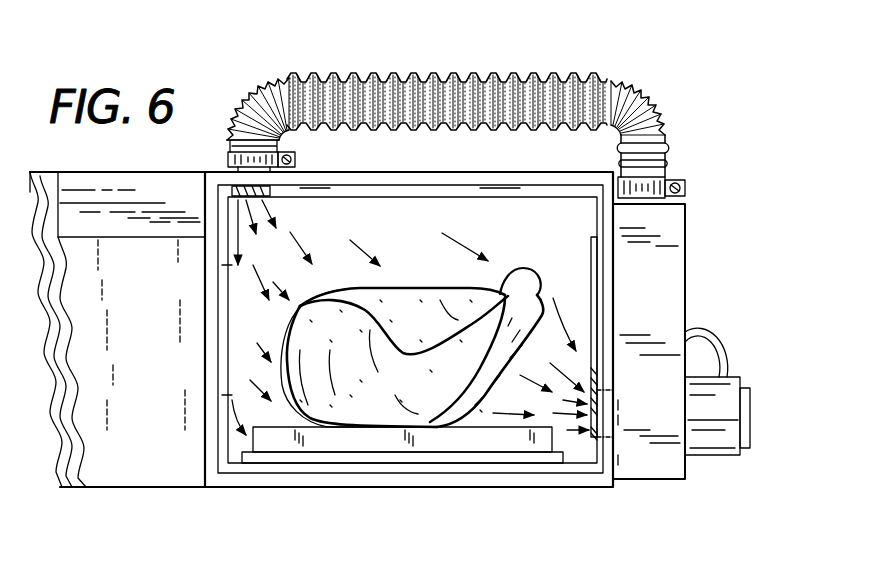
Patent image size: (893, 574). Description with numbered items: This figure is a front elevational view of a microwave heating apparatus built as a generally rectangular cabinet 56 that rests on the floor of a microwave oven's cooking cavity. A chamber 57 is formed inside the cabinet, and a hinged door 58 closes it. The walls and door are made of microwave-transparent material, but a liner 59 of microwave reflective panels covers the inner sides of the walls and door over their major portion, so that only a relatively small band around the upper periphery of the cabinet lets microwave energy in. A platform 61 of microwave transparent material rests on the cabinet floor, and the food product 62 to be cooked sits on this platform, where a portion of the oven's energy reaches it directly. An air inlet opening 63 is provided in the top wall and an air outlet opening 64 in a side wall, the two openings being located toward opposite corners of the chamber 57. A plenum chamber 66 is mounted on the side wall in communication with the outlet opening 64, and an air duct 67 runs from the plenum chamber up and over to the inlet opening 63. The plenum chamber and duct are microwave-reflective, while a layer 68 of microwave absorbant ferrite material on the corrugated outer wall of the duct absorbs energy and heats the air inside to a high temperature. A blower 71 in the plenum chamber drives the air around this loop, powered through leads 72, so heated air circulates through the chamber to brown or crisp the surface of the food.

The cabinet 56 is at (460, 151).
The chamber 57 is at (418, 227).
The hinged door 58 is at (150, 192).
The liner 59 is at (152, 450).
The platform 61 is at (375, 443).
The food product 62 is at (442, 289).
The air inlet opening 63 is at (265, 196).
The air outlet opening 64 is at (589, 295).
The plenum chamber 66 is at (663, 273).
The air duct 67 is at (660, 112).
The layer of microwave absorbant material 68 is at (557, 76).
The blower 71 is at (722, 440).
The leads 72 is at (716, 344).